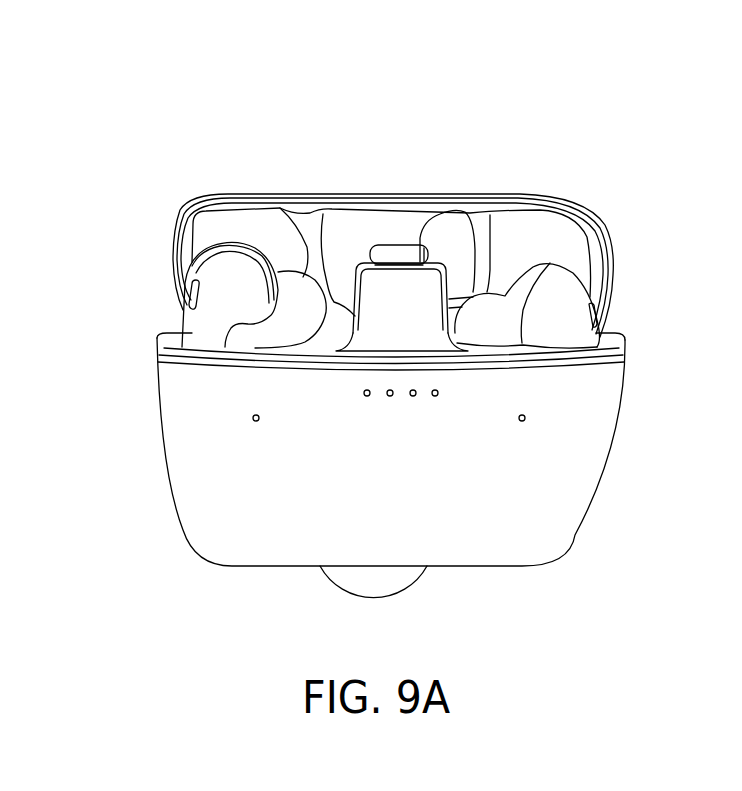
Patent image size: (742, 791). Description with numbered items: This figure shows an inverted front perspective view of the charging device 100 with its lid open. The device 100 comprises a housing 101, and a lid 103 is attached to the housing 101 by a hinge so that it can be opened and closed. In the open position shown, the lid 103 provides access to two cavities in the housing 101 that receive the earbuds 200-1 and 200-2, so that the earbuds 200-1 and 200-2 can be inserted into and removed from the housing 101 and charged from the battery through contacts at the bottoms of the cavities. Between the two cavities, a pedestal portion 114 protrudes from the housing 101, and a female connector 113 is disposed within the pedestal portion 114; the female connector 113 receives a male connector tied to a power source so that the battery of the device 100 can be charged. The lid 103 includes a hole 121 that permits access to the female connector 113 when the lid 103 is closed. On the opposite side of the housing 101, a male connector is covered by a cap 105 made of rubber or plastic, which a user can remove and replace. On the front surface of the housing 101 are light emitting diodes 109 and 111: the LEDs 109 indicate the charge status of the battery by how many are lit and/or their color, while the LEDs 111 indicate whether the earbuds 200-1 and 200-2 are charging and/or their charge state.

The device 100 is at (158, 146).
The housing 101 is at (606, 430).
The lid 103 is at (612, 233).
The cap 105 is at (400, 582).
The light emitting diodes (LEDs) 109 is at (436, 397).
The light emitting diodes (LEDs) 111 is at (256, 422).
The female connector 113 is at (420, 262).
The pedestal portion 114 is at (371, 270).
The hole 121 is at (394, 247).
The earbud 200-1 is at (186, 303).
The earbud 200-2 is at (597, 318).